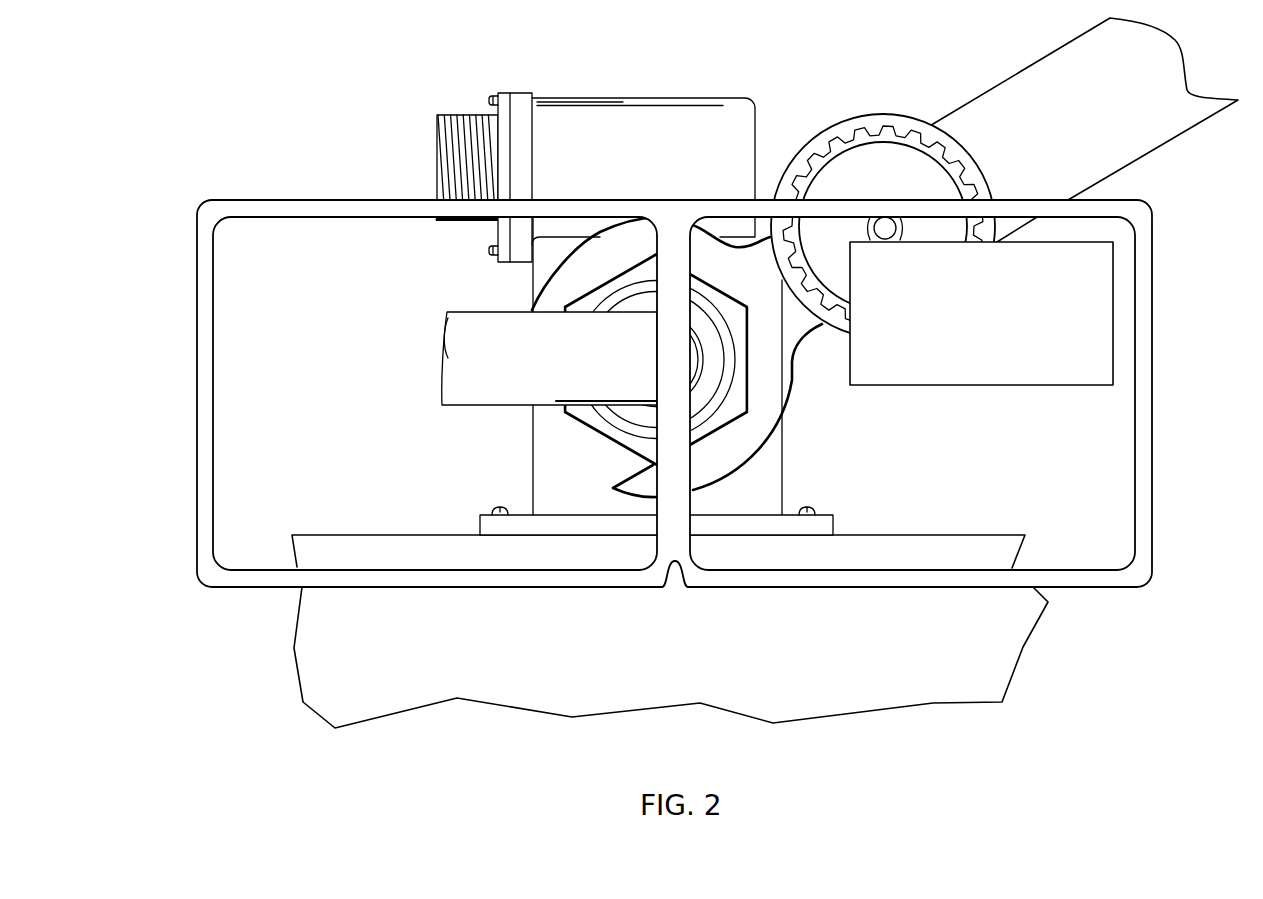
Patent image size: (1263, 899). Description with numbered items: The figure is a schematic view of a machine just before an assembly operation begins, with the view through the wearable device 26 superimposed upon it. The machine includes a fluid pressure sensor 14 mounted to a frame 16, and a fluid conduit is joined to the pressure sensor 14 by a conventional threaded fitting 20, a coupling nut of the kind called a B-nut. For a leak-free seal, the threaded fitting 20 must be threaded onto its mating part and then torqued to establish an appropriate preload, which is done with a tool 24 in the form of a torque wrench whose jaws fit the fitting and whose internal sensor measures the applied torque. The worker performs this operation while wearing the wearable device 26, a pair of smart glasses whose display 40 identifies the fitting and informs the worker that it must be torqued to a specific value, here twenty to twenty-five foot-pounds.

The fluid pressure sensor 14 is at (663, 164).
The frame 16 is at (686, 660).
The threaded fitting 20 is at (593, 420).
The tool 24 is at (1036, 159).
The wearable device 26 is at (1147, 418).
The display 40 is at (1103, 267).